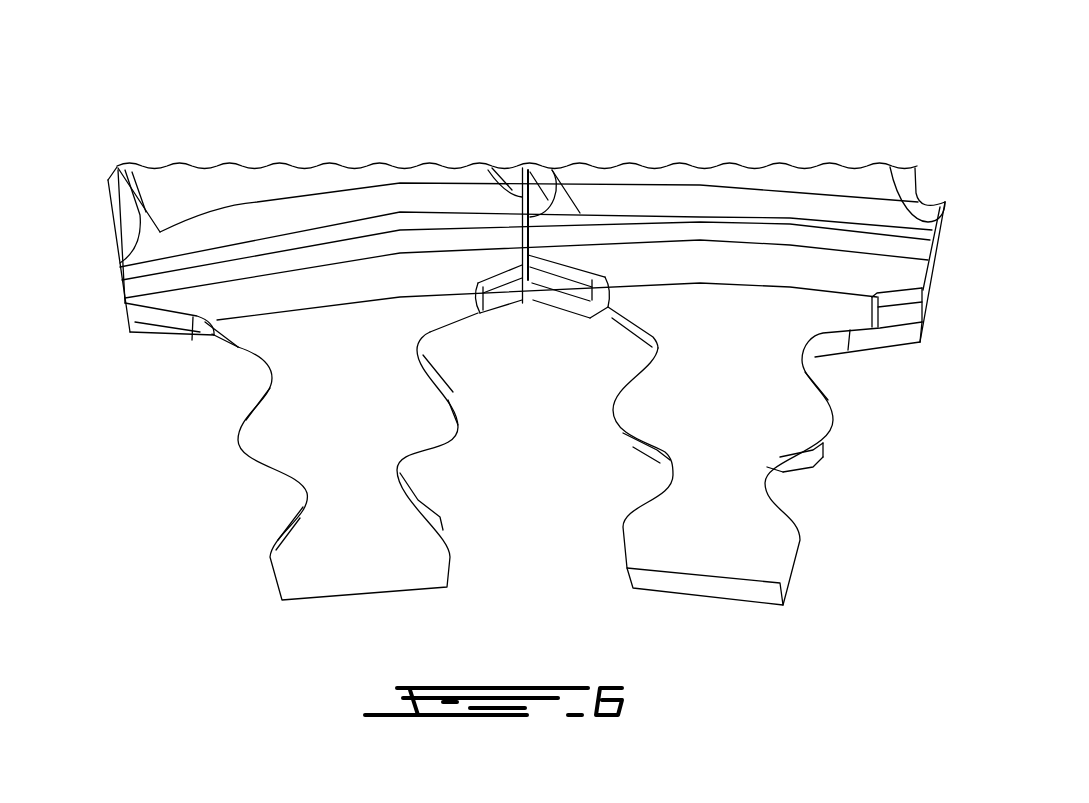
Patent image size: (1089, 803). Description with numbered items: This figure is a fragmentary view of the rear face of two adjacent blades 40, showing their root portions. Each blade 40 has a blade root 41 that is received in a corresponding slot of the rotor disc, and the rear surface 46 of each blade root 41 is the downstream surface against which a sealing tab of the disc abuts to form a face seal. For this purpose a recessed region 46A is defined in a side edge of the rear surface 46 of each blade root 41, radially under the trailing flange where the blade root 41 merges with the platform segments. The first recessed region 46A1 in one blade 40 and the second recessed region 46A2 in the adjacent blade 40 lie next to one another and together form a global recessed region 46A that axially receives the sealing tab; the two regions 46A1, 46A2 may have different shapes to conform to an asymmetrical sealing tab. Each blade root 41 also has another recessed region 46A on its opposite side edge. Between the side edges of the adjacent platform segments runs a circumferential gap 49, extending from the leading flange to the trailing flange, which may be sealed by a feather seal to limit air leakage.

The blade 40 is at (953, 146).
The blade root 41 is at (352, 425).
The rear surface 46 is at (453, 303).
The recessed region 46A is at (543, 267).
The first recessed region 46A1 is at (942, 403).
The second recessed region 46A2 is at (567, 287).
The circumferential gap 49 is at (525, 166).